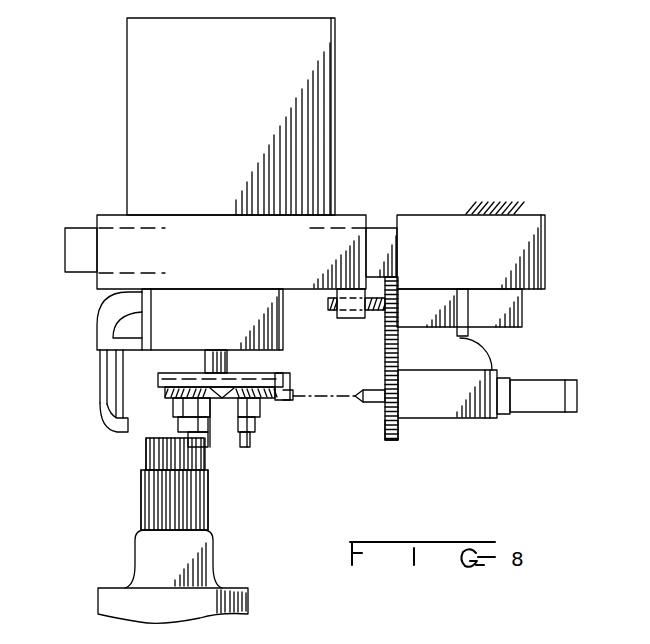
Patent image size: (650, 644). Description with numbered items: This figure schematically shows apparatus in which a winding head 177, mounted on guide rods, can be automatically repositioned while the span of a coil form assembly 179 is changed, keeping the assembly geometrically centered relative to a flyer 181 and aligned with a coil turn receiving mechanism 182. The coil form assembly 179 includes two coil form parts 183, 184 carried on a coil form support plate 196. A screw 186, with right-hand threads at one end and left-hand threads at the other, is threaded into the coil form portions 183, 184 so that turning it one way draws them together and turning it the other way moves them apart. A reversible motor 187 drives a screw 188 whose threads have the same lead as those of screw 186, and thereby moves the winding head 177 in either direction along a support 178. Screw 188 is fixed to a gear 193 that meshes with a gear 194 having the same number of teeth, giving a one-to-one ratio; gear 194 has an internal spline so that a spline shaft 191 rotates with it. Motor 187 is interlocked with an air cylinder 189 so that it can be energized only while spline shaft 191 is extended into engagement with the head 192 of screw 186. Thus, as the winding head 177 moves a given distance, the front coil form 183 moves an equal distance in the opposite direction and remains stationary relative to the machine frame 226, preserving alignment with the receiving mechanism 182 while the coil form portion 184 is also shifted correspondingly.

The winding head 177 is at (345, 201).
The support 178 is at (80, 236).
The flyer 181 is at (106, 322).
The coil form support plate 196 is at (187, 373).
The head of screw 192 is at (289, 392).
The front coil form portion 183 is at (175, 405).
The screw 186 is at (222, 399).
The coil form portion 184 is at (258, 424).
The coil form assembly 179 is at (257, 436).
The coil turn receiving mechanism 182 is at (146, 468).
The machine frame 226 is at (528, 228).
The motor 187 is at (522, 306).
The gear 193 is at (392, 300).
The gear 194 is at (400, 427).
The screw 188 is at (373, 312).
The air cylinder 189 is at (540, 402).
The spline shaft 191 is at (377, 402).